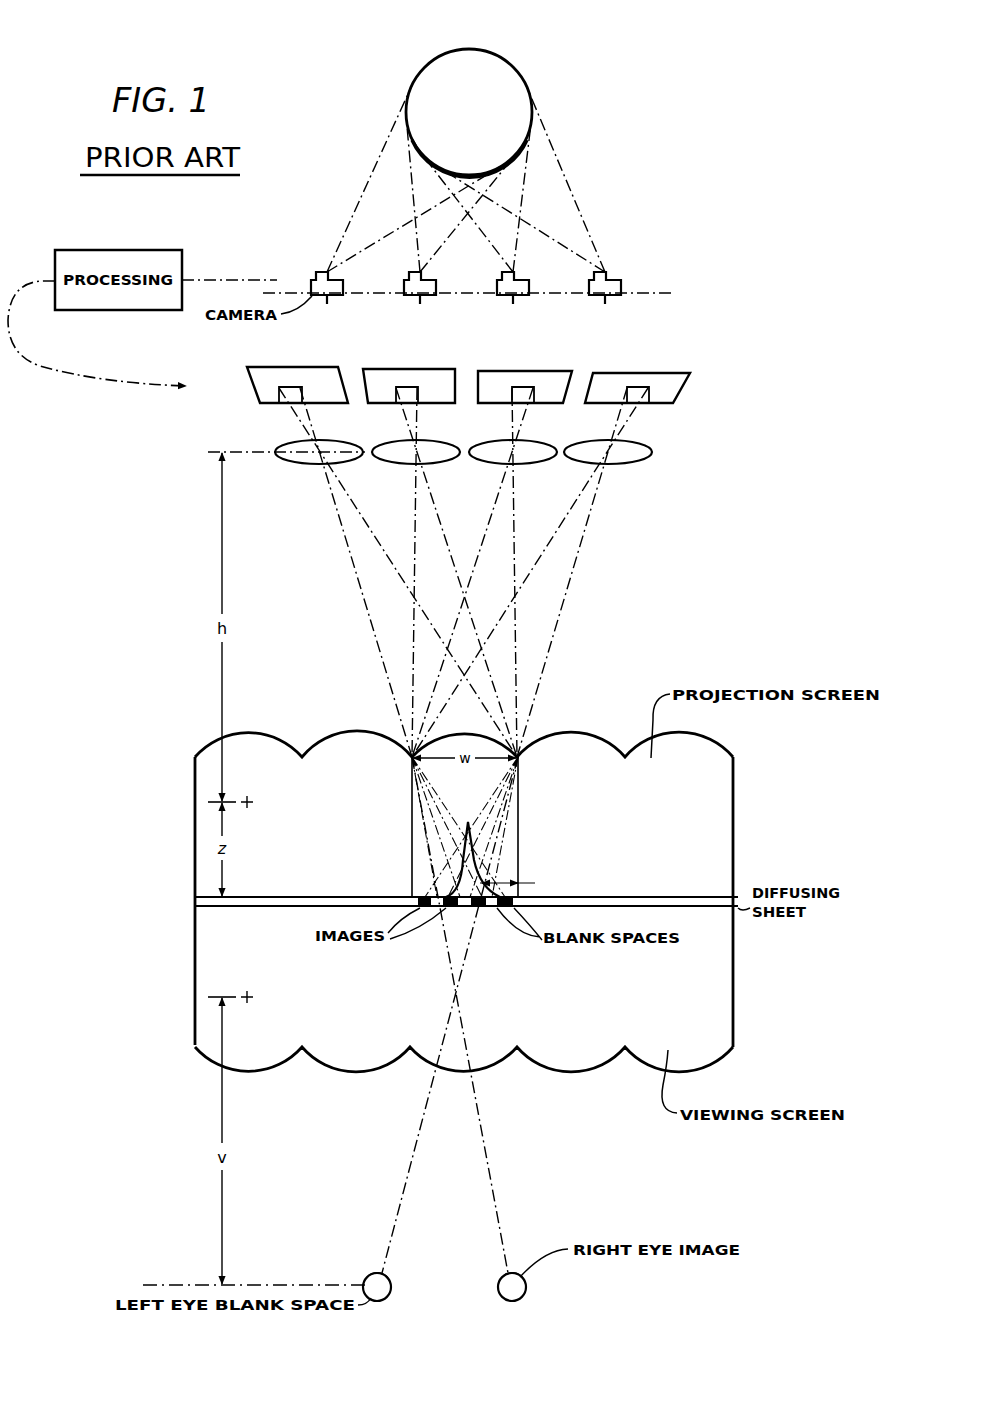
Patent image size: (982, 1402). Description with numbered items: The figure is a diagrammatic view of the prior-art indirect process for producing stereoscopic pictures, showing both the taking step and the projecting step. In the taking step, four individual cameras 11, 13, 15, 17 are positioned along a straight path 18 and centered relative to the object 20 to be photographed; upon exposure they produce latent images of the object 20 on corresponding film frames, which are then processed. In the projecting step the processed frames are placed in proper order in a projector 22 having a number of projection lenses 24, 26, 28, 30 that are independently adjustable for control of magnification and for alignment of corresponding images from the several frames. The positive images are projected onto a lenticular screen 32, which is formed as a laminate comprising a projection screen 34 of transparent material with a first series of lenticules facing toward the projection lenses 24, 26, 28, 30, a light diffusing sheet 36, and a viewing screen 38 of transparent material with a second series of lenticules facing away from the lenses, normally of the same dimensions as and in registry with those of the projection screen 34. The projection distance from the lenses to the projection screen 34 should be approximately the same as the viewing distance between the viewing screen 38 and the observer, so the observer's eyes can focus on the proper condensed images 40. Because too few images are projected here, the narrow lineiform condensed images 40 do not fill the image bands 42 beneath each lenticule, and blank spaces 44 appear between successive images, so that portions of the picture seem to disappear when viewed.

The camera 11 is at (533, 213).
The camera 13 is at (477, 229).
The camera 15 is at (461, 228).
The camera 17 is at (406, 212).
The straight path 18 is at (656, 296).
The object 20 is at (420, 72).
The projector 22 is at (256, 423).
The projection lens 24 is at (304, 462).
The projection lens 26 is at (410, 462).
The projection lens 28 is at (494, 458).
The projection lens 30 is at (628, 460).
The lenticular screen 32 is at (178, 790).
The projection screen 34 is at (285, 863).
The light diffusing sheet 36 is at (196, 899).
The viewing screen 38 is at (285, 973).
The condensed images 40 is at (428, 897).
The image bands 42 is at (471, 908).
The blank spaces 44 is at (490, 842).